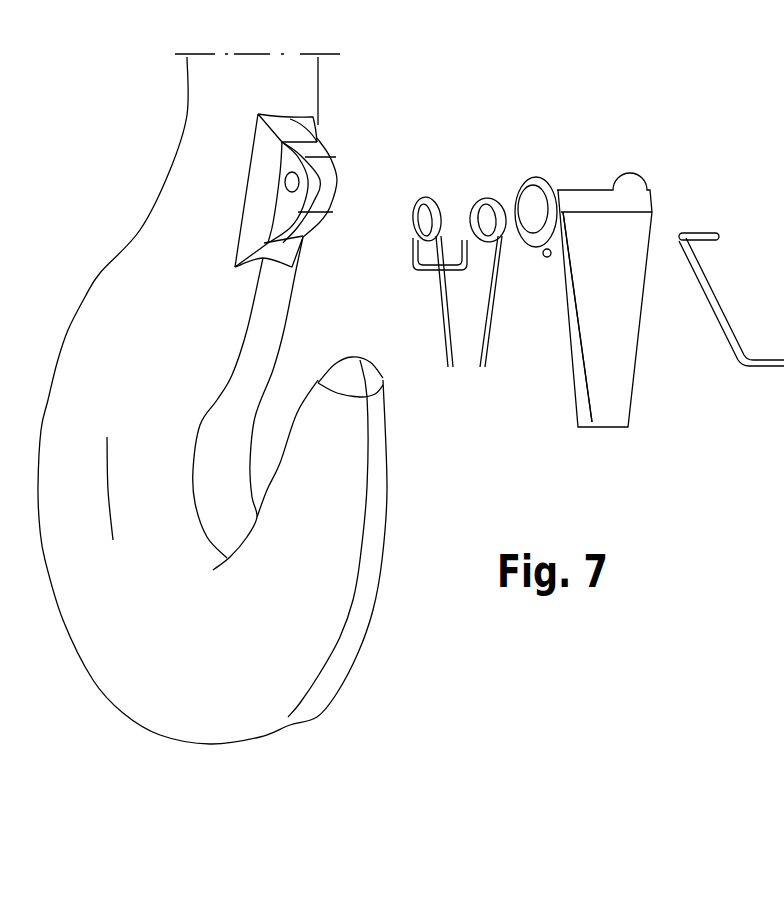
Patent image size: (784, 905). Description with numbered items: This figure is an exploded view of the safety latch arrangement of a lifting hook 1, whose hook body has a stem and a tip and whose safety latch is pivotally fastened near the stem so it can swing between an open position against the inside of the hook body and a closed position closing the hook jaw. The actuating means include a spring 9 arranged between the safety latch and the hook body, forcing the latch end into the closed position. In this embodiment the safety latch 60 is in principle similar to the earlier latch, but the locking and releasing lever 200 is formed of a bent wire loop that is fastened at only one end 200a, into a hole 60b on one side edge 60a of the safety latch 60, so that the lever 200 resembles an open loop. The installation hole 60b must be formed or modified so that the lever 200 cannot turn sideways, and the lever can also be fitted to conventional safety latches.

The lifting hook 1 is at (118, 197).
The spring 9 is at (432, 200).
The safety latch 60 is at (602, 328).
The side edge 60a is at (568, 350).
The hole 60b is at (543, 256).
The locking and releasing lever 200 is at (731, 259).
The end 200a is at (700, 232).